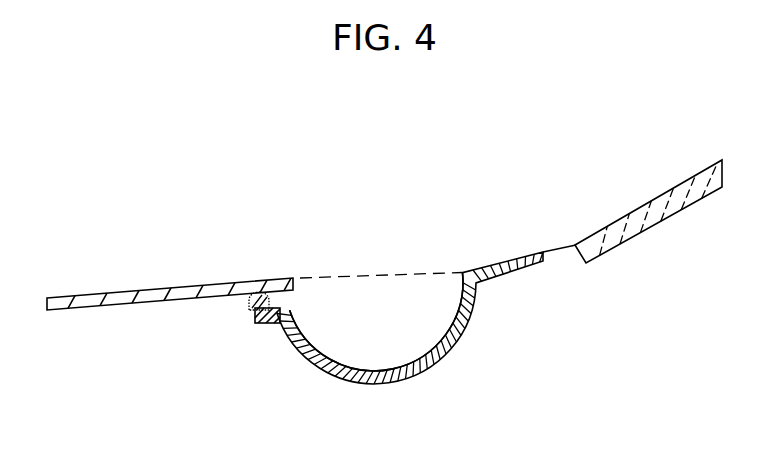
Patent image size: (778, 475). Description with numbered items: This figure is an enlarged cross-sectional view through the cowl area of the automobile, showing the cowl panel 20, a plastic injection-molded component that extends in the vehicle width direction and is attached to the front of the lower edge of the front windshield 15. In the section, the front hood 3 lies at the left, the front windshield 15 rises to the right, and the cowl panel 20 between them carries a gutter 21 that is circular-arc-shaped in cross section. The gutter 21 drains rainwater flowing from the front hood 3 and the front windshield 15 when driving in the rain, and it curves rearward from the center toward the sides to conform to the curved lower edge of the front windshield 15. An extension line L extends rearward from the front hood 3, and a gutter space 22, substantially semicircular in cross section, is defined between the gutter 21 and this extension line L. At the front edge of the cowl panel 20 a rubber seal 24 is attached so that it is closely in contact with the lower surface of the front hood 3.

The front hood 3 is at (185, 280).
The extension line L is at (323, 277).
The gutter space 22 is at (377, 303).
The cowl panel 20 is at (460, 353).
The gutter 21 is at (414, 368).
The rubber seal 24 is at (248, 300).
The front windshield 15 is at (683, 187).